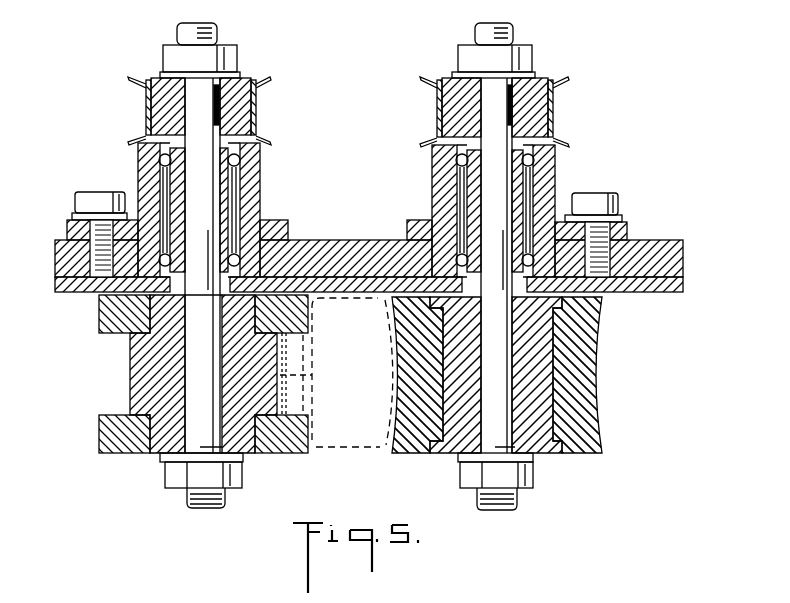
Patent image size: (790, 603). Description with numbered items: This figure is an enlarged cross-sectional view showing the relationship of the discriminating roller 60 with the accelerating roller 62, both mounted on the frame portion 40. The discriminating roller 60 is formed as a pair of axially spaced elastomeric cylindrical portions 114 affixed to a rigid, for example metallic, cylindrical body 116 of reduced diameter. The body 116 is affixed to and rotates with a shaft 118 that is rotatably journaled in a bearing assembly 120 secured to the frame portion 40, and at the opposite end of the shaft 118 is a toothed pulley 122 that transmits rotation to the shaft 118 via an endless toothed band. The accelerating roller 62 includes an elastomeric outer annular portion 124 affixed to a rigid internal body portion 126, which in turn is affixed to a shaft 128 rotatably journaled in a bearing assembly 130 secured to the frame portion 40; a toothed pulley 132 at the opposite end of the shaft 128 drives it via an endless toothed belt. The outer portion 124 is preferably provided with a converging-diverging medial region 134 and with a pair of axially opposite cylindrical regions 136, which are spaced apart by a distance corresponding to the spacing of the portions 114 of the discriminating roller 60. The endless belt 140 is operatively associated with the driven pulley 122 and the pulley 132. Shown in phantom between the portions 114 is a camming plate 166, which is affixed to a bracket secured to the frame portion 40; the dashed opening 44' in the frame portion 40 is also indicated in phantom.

The frame portion 40 is at (318, 234).
The opening in frame plate 44' is at (346, 391).
The discriminating roller 60 is at (138, 469).
The accelerating roller 62 is at (441, 462).
The elastomeric cylindrical portions 114 is at (100, 323).
The cylindrical body 116 is at (138, 378).
The shaft 118 is at (195, 438).
The bearing assembly 120 is at (230, 202).
The toothed pulley 122 is at (238, 100).
The outer annular portion 124 is at (405, 443).
The internal body portion 126 is at (537, 383).
The shaft 128 is at (507, 330).
The bearing assembly 130 is at (523, 190).
The toothed pulley 132 is at (548, 108).
The converging-diverging medial region 134 is at (592, 365).
The cylindrical regions 136 is at (397, 427).
The endless belt 140 is at (147, 110).
The camming plate 166 is at (303, 373).